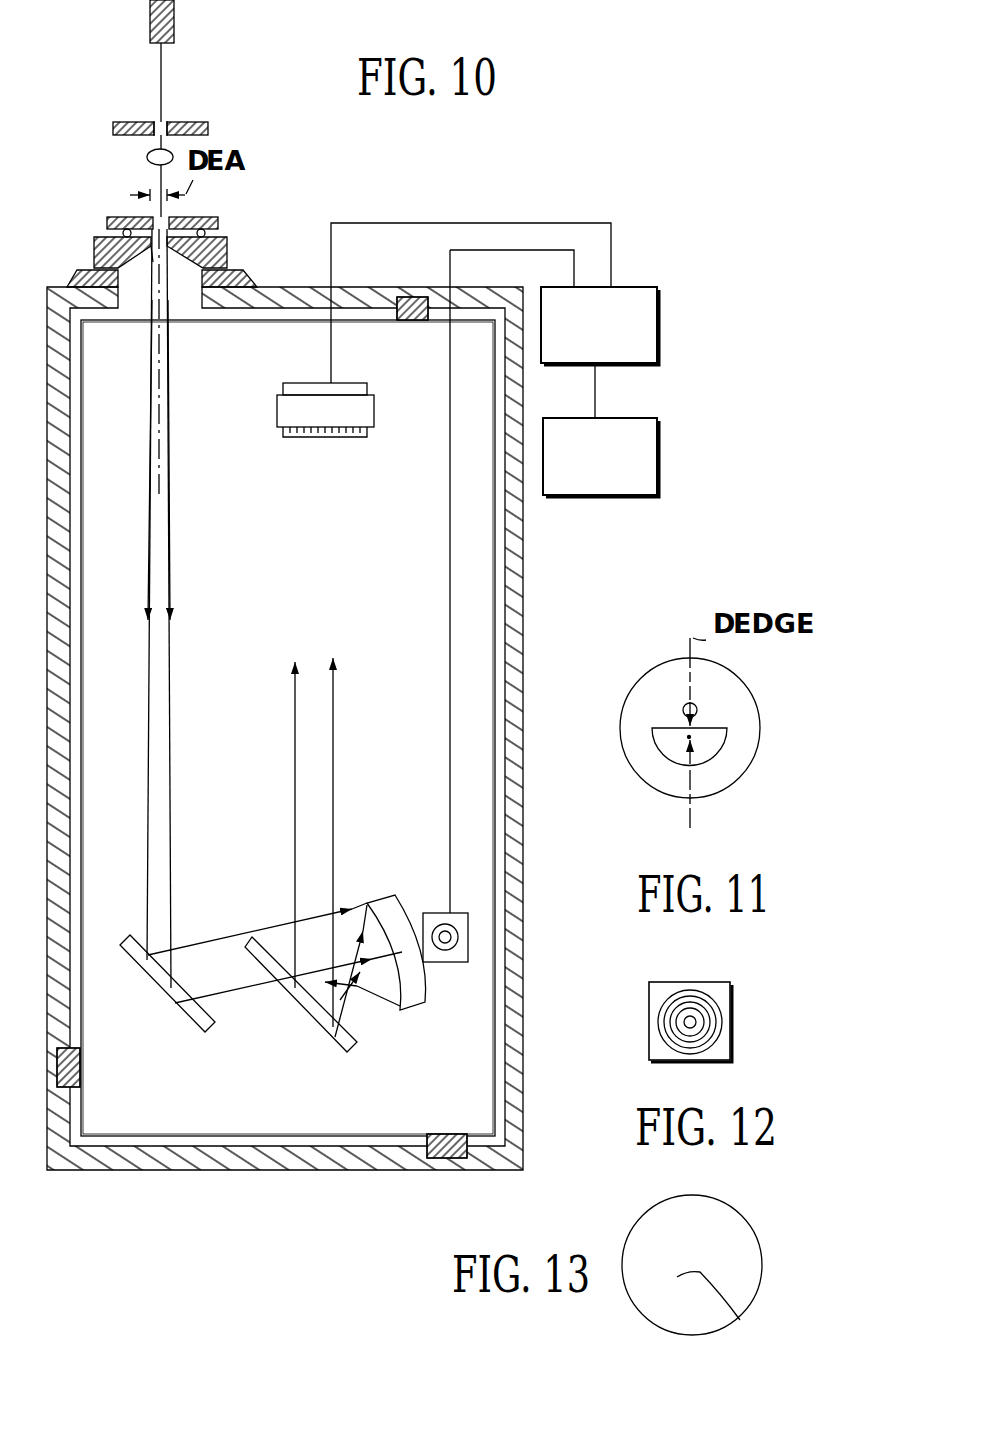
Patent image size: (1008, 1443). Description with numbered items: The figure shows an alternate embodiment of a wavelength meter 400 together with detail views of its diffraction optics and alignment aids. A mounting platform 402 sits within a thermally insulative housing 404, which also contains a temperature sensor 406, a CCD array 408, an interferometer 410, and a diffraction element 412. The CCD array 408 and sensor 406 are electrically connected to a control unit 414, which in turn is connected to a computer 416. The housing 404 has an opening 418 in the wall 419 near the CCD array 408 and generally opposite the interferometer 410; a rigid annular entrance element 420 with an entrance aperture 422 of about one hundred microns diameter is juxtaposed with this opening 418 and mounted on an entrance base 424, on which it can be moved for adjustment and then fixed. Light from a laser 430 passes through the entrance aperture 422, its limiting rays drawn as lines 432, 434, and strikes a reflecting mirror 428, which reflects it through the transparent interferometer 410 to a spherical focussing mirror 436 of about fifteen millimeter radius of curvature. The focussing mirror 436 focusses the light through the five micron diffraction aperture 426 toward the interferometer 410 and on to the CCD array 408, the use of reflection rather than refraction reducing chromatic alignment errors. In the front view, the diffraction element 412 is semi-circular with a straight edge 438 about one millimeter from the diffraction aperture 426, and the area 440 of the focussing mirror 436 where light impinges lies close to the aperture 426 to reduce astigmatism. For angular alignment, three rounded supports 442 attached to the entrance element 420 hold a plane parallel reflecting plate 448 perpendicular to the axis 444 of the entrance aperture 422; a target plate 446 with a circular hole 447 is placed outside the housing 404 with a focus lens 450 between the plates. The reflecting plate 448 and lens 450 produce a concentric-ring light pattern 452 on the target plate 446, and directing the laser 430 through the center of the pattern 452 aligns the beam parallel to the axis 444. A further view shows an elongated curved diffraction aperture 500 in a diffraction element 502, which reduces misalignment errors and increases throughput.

In FIG. 10, the wavelength meter 400 is at (382, 196).
In FIG. 10, the mounting platform 402 is at (227, 1136).
In FIG. 10, the thermally insulative housing 404 is at (303, 1146).
In FIG. 10, the temperature sensor 406 is at (470, 925).
In FIG. 10, the CCD array 408 is at (277, 410).
In FIG. 10, the interferometer 410 is at (312, 1008).
In FIG. 10, the diffraction element 412 is at (357, 992).
In FIG. 11, the diffraction element 412 is at (707, 755).
In FIG. 10, the control unit 414 is at (635, 283).
In FIG. 10, the computer 416 is at (635, 417).
In FIG. 10, the opening 418 is at (180, 300).
In FIG. 10, the wall 419 is at (356, 290).
In FIG. 10, the entrance element 420 is at (93, 256).
In FIG. 10, the entrance aperture 422 is at (153, 263).
In FIG. 10, the entrance base 424 is at (248, 278).
In FIG. 10, the diffraction aperture 426 is at (340, 966).
In FIG. 11, the diffraction aperture 426 is at (690, 737).
In FIG. 10, the reflecting mirror 428 is at (177, 1003).
In FIG. 10, the laser 430 is at (178, 28).
In FIG. 10, the limiting ray line 432 is at (172, 565).
In FIG. 10, the limiting ray line 434 is at (147, 565).
In FIG. 10, the spherical focussing mirror 436 is at (386, 896).
In FIG. 11, the spherical focussing mirror 436 is at (650, 786).
In FIG. 11, the straight edge 438 is at (655, 736).
In FIG. 11, the impingement area 440 is at (684, 705).
In FIG. 10, the rounded supports 442 is at (122, 232).
In FIG. 10, the axis 444 is at (164, 68).
In FIG. 10, the target plate 446 is at (210, 132).
In FIG. 12, the target plate 446 is at (731, 983).
In FIG. 10, the circular hole 447 is at (157, 121).
In FIG. 10, the plane parallel reflecting plate 448 is at (112, 216).
In FIG. 10, the focus lens 450 is at (147, 161).
In FIG. 12, the light pattern 452 is at (722, 1013).
In FIG. 13, the elongated diffraction aperture 500 is at (740, 1320).
In FIG. 13, the diffraction element 502 is at (760, 1288).